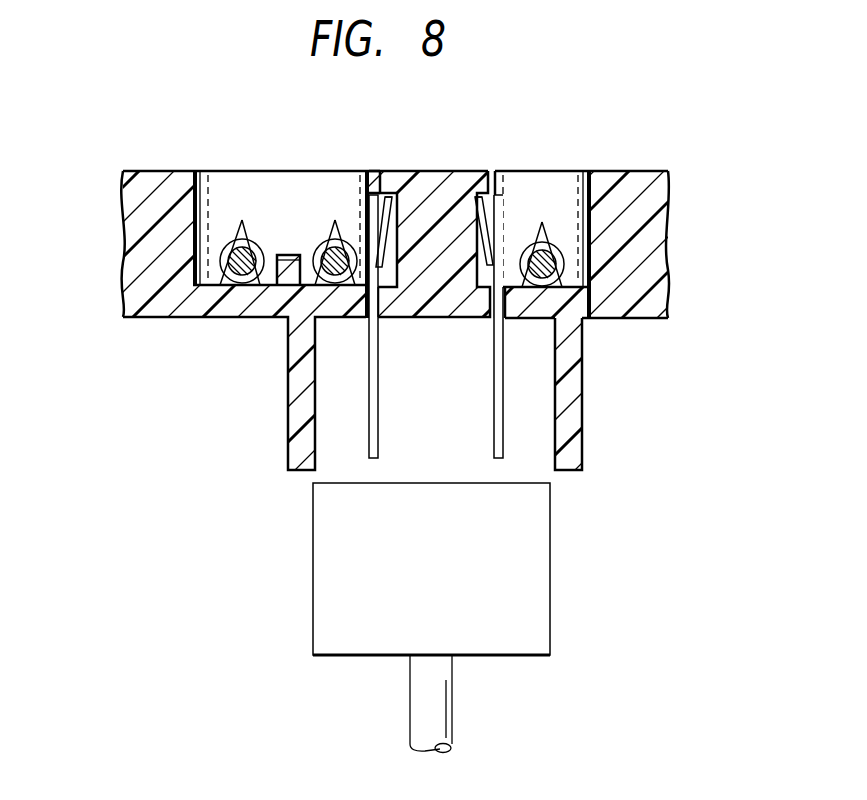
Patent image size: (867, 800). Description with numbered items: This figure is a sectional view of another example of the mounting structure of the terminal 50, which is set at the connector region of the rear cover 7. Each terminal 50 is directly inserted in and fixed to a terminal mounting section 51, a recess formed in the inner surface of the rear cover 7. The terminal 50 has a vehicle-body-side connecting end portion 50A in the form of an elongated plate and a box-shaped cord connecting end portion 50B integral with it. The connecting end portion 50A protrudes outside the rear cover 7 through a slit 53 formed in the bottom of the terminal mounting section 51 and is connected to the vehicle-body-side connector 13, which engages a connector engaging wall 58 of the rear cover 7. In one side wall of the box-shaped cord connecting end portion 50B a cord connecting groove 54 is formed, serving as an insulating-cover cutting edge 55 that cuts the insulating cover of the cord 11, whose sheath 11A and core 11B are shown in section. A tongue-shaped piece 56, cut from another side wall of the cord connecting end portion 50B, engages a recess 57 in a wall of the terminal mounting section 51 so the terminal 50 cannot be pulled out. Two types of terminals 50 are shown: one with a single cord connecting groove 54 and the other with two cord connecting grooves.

The rear cover 7 is at (662, 278).
The electric wire 11 is at (369, 340).
The insulation sheath of wire 11A is at (226, 295).
The conductor core of wire 11B is at (243, 284).
The vehicle-body-side connector 13 is at (538, 614).
The terminal 50 is at (305, 158).
The vehicle-body-side connecting end portion 50A is at (492, 425).
The cord connecting end portion 50B is at (380, 413).
The terminal mounting section 51 is at (200, 194).
The slit 53 is at (363, 320).
The cord connecting groove 54 is at (257, 287).
The insulating-cover cutting edge 55 is at (240, 247).
The tongue-shaped piece 56 is at (477, 218).
The recess 57 is at (487, 268).
The connector engaging wall 58 is at (583, 453).